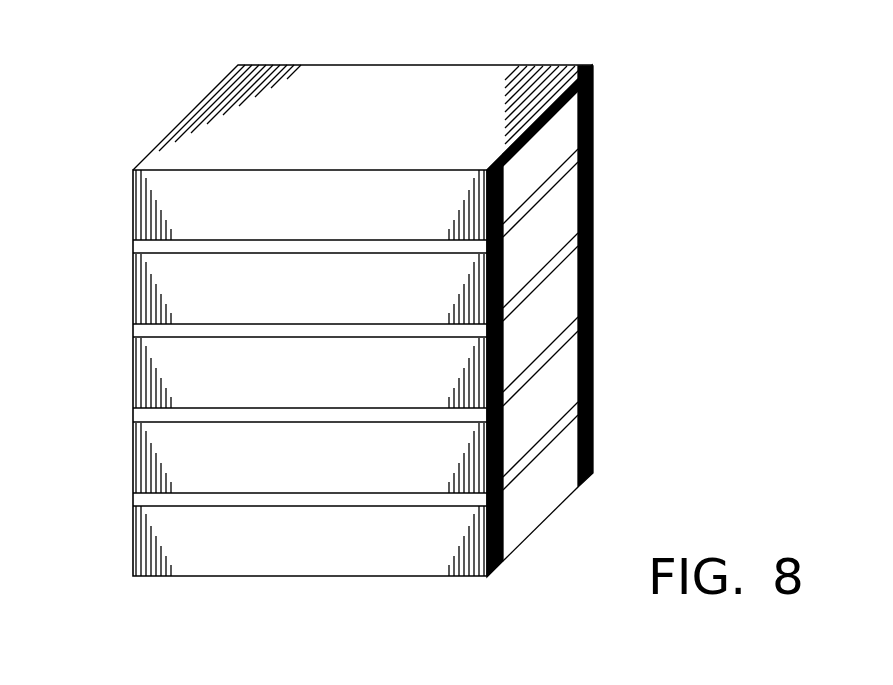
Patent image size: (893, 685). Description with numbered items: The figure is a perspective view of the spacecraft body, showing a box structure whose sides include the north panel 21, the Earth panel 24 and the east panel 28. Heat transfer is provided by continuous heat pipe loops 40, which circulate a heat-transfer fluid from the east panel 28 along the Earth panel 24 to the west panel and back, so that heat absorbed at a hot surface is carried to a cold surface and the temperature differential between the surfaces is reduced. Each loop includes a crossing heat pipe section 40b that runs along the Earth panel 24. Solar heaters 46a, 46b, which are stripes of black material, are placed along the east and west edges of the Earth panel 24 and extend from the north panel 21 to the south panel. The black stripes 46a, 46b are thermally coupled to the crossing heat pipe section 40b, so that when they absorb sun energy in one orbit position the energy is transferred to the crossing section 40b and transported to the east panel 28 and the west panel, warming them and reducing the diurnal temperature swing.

The north panel 21 is at (382, 107).
The Earth panel 24 is at (543, 497).
The east panel 28 is at (285, 558).
The heat pipe circulation loops 40 is at (129, 248).
The crossing heat pipe section 40b is at (540, 360).
The solar heater 46a is at (508, 553).
The solar heater 46b is at (593, 102).